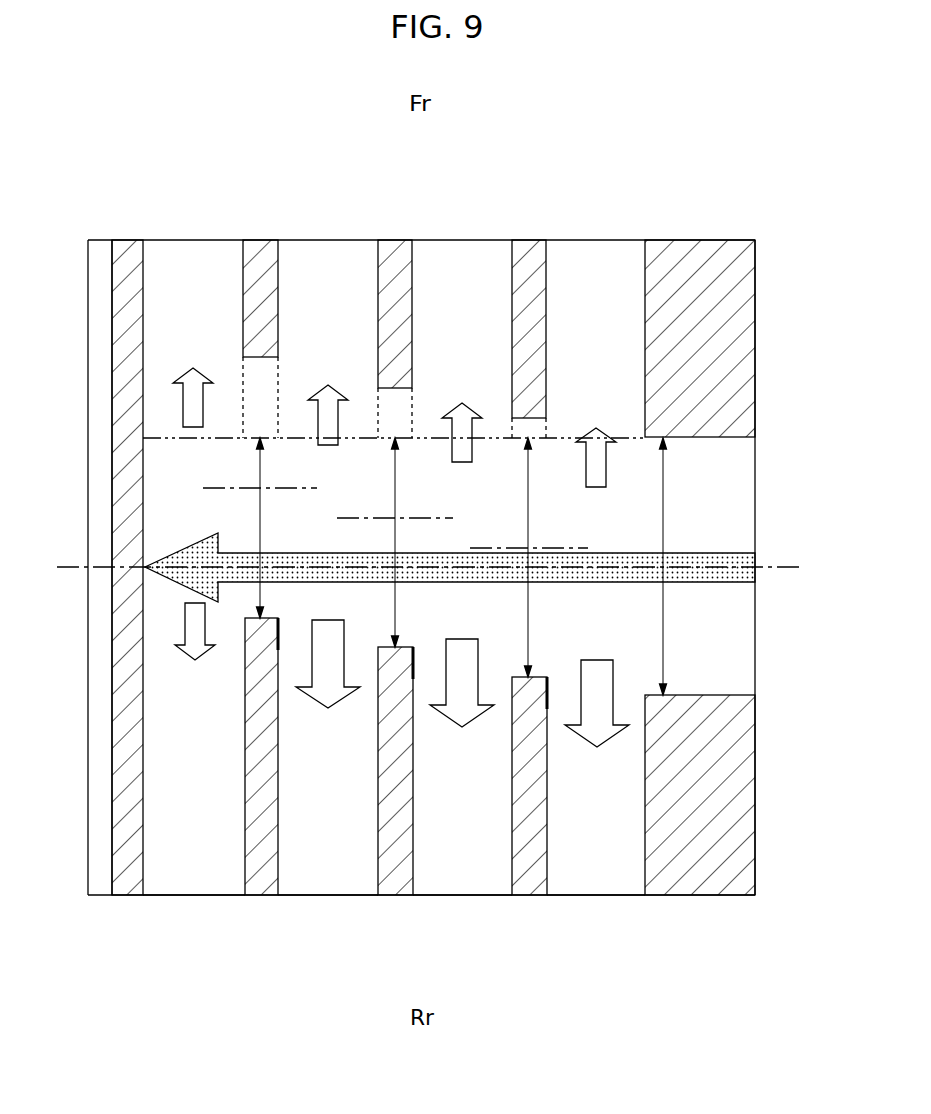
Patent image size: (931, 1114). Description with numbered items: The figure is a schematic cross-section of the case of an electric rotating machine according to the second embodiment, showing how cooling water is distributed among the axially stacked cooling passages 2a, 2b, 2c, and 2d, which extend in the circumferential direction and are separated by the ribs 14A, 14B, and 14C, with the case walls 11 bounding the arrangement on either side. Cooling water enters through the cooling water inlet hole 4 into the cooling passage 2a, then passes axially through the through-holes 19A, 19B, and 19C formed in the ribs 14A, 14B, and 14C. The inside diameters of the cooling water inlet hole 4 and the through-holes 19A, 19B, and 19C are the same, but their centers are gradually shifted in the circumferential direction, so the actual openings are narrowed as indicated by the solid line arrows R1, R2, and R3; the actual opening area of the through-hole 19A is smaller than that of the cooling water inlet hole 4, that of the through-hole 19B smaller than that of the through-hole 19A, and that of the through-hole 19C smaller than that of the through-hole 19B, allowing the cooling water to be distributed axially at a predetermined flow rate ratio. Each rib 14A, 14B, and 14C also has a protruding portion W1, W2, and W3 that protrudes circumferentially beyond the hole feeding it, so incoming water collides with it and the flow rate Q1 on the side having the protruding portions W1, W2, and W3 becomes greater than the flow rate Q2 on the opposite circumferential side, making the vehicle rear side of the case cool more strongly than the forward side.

The case wall 11 is at (133, 240).
The rib 14A is at (537, 250).
The rib 14B is at (390, 250).
The rib 14C is at (266, 250).
The through-hole 19A is at (526, 424).
The through-hole 19B is at (392, 396).
The through-hole 19C is at (262, 360).
The cooling water inlet hole 4 is at (732, 695).
The cooling passage 2a is at (607, 876).
The cooling passage 2b is at (487, 876).
The cooling passage 2c is at (338, 876).
The cooling passage 2d is at (200, 878).
The flow rate Q1 is at (321, 710).
The flow rate Q2 is at (180, 366).
The solid line arrow R1 is at (543, 557).
The solid line arrow R2 is at (410, 542).
The solid line arrow R3 is at (272, 528).
The protruding portion W1 is at (548, 696).
The protruding portion W2 is at (414, 667).
The protruding portion W3 is at (281, 642).